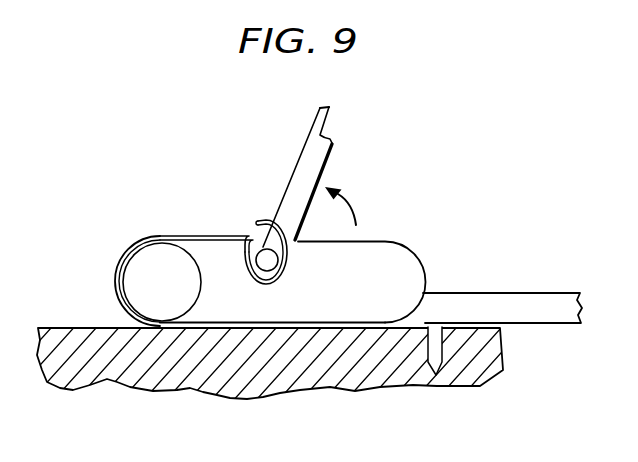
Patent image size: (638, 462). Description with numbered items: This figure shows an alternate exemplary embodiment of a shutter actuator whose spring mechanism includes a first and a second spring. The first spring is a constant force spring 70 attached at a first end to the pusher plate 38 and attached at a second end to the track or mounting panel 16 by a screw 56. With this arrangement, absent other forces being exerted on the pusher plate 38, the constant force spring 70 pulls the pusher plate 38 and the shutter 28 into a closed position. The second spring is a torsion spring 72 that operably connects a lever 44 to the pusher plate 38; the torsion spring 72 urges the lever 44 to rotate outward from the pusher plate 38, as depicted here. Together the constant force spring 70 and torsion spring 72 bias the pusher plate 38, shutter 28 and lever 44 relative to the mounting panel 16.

The track or mounting panel 16 is at (488, 360).
The shutter 28 is at (532, 292).
The pusher plate 38 is at (362, 258).
The lever 44 is at (333, 142).
The screw 56 is at (433, 386).
The constant force spring 70 is at (130, 318).
The torsion spring 72 is at (258, 191).